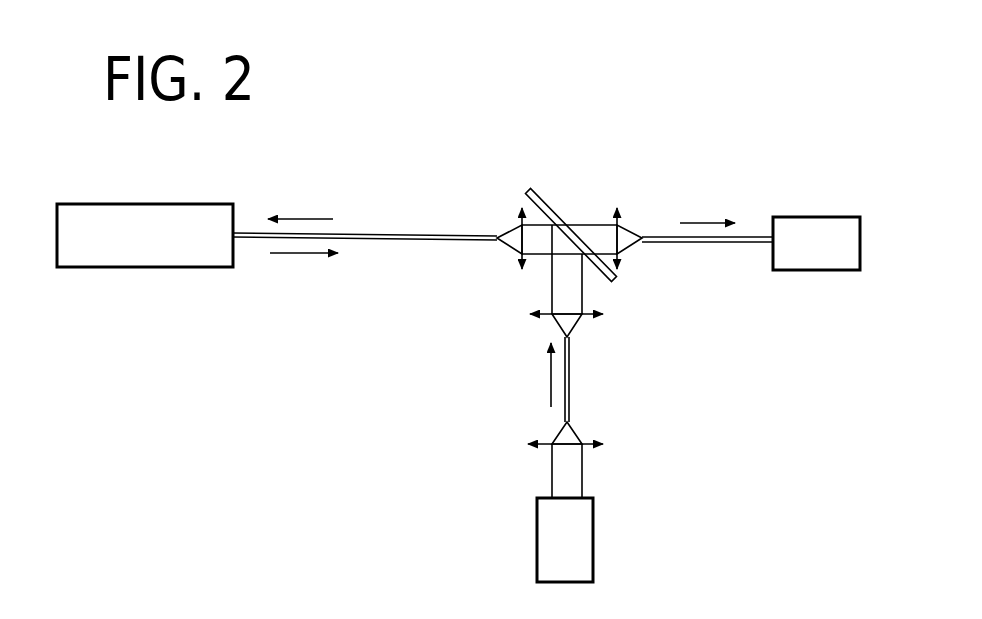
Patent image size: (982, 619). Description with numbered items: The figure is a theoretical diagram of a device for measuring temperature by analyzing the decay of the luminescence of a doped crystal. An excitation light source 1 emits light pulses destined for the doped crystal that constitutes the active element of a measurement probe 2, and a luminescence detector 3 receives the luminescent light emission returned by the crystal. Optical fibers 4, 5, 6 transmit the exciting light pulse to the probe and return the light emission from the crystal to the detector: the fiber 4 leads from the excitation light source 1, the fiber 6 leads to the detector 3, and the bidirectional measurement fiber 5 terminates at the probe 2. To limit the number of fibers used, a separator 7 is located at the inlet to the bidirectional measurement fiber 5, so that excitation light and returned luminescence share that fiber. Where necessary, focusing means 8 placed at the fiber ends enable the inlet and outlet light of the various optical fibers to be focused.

The excitation light source 1 is at (575, 548).
The measurement probe 2 is at (142, 248).
The luminescence detector 3 is at (823, 252).
The optical fiber 4 is at (569, 387).
The bidirectional measurement fiber 5 is at (422, 233).
The optical fiber 6 is at (728, 240).
The separator 7 is at (543, 202).
The focusing means 8 is at (517, 260).